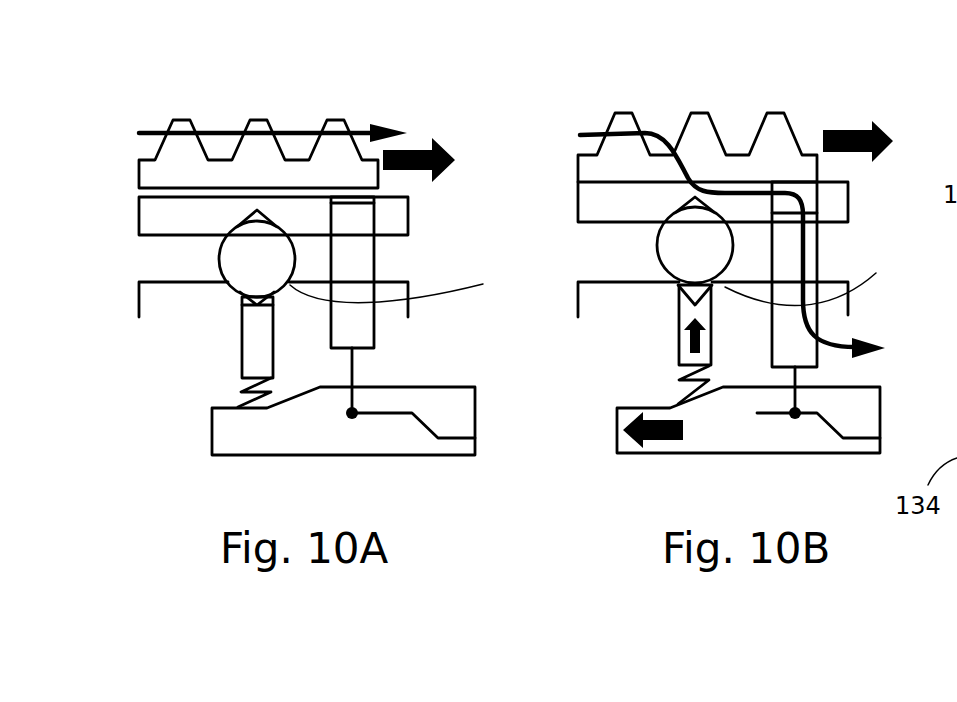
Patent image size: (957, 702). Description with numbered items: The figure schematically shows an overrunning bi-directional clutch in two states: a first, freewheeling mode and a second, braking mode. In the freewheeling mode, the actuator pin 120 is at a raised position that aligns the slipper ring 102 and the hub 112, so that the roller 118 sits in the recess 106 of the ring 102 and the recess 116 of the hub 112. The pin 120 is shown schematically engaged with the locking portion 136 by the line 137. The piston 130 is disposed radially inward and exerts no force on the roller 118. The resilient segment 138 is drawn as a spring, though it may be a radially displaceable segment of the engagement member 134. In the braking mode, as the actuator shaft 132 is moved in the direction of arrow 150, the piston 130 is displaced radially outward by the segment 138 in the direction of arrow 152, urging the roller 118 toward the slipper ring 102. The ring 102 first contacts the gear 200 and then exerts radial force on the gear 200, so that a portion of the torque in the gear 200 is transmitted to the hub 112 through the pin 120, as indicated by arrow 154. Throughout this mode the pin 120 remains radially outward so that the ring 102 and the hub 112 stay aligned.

In FIG. 10A, the gear 200 is at (257, 159).
In FIG. 10B, the gear 200 is at (693, 131).
In FIG. 10A, the recess 106 is at (265, 212).
In FIG. 10B, the recess 106 is at (716, 208).
In FIG. 10A, the slipper ring 102 is at (188, 222).
In FIG. 10B, the slipper ring 102 is at (605, 205).
In FIG. 10A, the actuator pin 120 is at (357, 268).
In FIG. 10B, the actuator pin 120 is at (812, 263).
In FIG. 10A, the roller 118 is at (253, 268).
In FIG. 10B, the roller 118 is at (680, 245).
In FIG. 10A, the hub 112 is at (182, 302).
In FIG. 10B, the hub 112 is at (645, 312).
In FIG. 10A, the recess 116 is at (410, 284).
In FIG. 10B, the recess 116 is at (824, 281).
In FIG. 10A, the piston 130 is at (263, 328).
In FIG. 10B, the piston 130 is at (708, 322).
In FIG. 10A, the resilient segment 138 is at (233, 405).
In FIG. 10B, the resilient segment 138 is at (677, 392).
In FIG. 10A, the engagement member 134 is at (235, 432).
In FIG. 10B, the engagement member 134 is at (625, 447).
In FIG. 10A, the locking portion 136 is at (387, 398).
In FIG. 10B, the locking portion 136 is at (833, 410).
In FIG. 10A, the line 137 is at (347, 397).
In FIG. 10B, the line 137 is at (790, 395).
In FIG. 10A, the actuator shaft 132 is at (348, 446).
In FIG. 10B, the actuator shaft 132 is at (738, 442).
In FIG. 10B, the arrow 150 is at (667, 442).
In FIG. 10B, the arrow 152 is at (688, 343).
In FIG. 10B, the arrow 154 is at (868, 343).